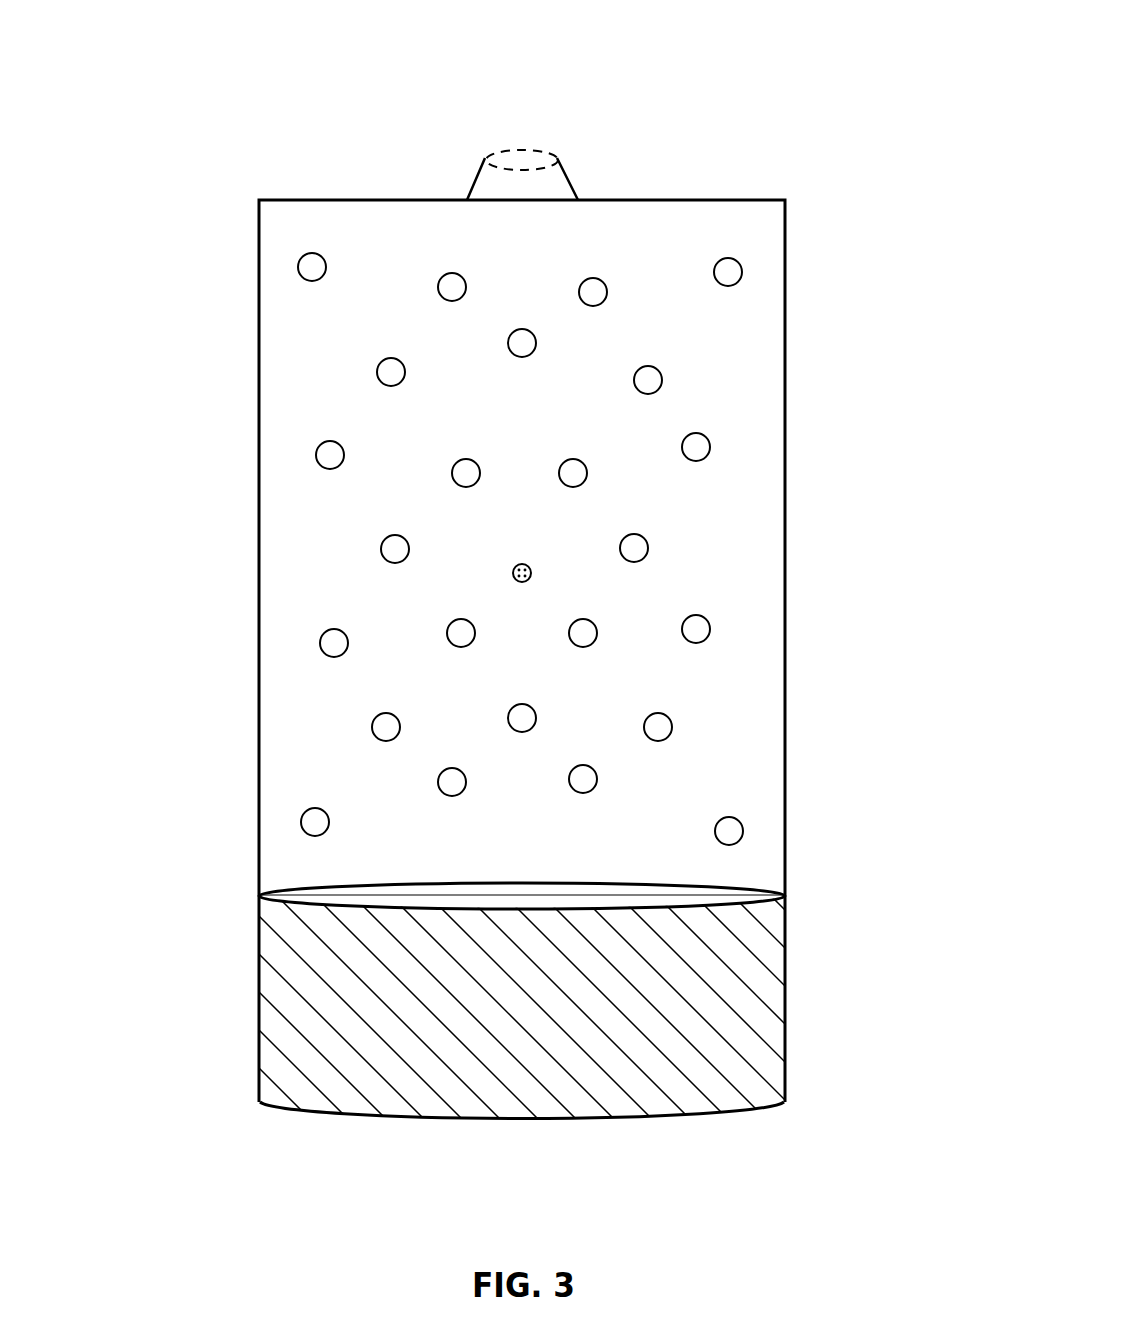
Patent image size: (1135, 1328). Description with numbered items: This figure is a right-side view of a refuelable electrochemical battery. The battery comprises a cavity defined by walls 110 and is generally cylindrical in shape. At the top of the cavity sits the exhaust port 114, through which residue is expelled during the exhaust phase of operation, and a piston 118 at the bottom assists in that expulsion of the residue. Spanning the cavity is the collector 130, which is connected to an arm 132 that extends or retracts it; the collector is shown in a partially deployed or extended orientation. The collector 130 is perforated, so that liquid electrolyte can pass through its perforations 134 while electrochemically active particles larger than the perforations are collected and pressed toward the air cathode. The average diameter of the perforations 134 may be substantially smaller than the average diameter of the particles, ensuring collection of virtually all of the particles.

The walls 110 is at (315, 198).
The exhaust port 114 is at (542, 152).
The piston 118 is at (315, 983).
The collector 130 is at (506, 436).
The arm 132 is at (532, 573).
The perforations 134 is at (448, 626).